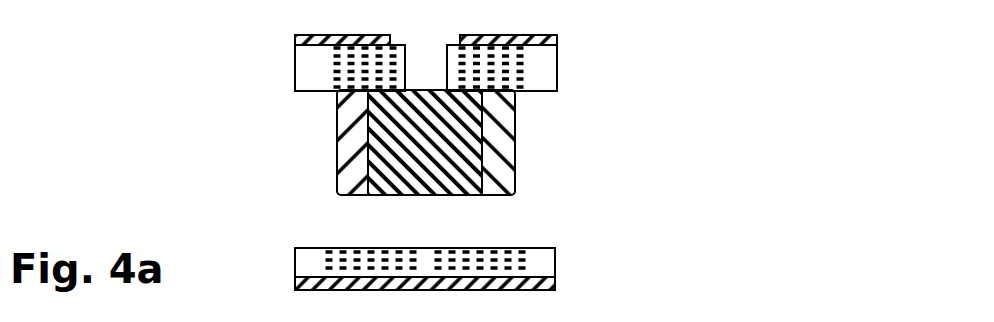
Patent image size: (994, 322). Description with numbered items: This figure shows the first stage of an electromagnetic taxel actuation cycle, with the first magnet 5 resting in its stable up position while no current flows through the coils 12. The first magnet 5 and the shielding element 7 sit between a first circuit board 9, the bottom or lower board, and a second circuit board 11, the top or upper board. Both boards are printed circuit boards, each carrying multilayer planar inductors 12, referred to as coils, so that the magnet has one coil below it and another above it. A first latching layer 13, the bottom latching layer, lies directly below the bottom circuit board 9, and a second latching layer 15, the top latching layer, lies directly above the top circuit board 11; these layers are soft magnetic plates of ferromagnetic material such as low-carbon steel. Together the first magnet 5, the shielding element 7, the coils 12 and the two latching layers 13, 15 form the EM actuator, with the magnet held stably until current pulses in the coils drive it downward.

The first magnet 5 is at (375, 183).
The shielding element 7 is at (347, 128).
The first circuit board 9 is at (305, 256).
The second circuit board 11 is at (300, 80).
The multilayer planar inductor 12 is at (557, 49).
The first latching layer 13 is at (300, 285).
The second latching layer 15 is at (296, 39).